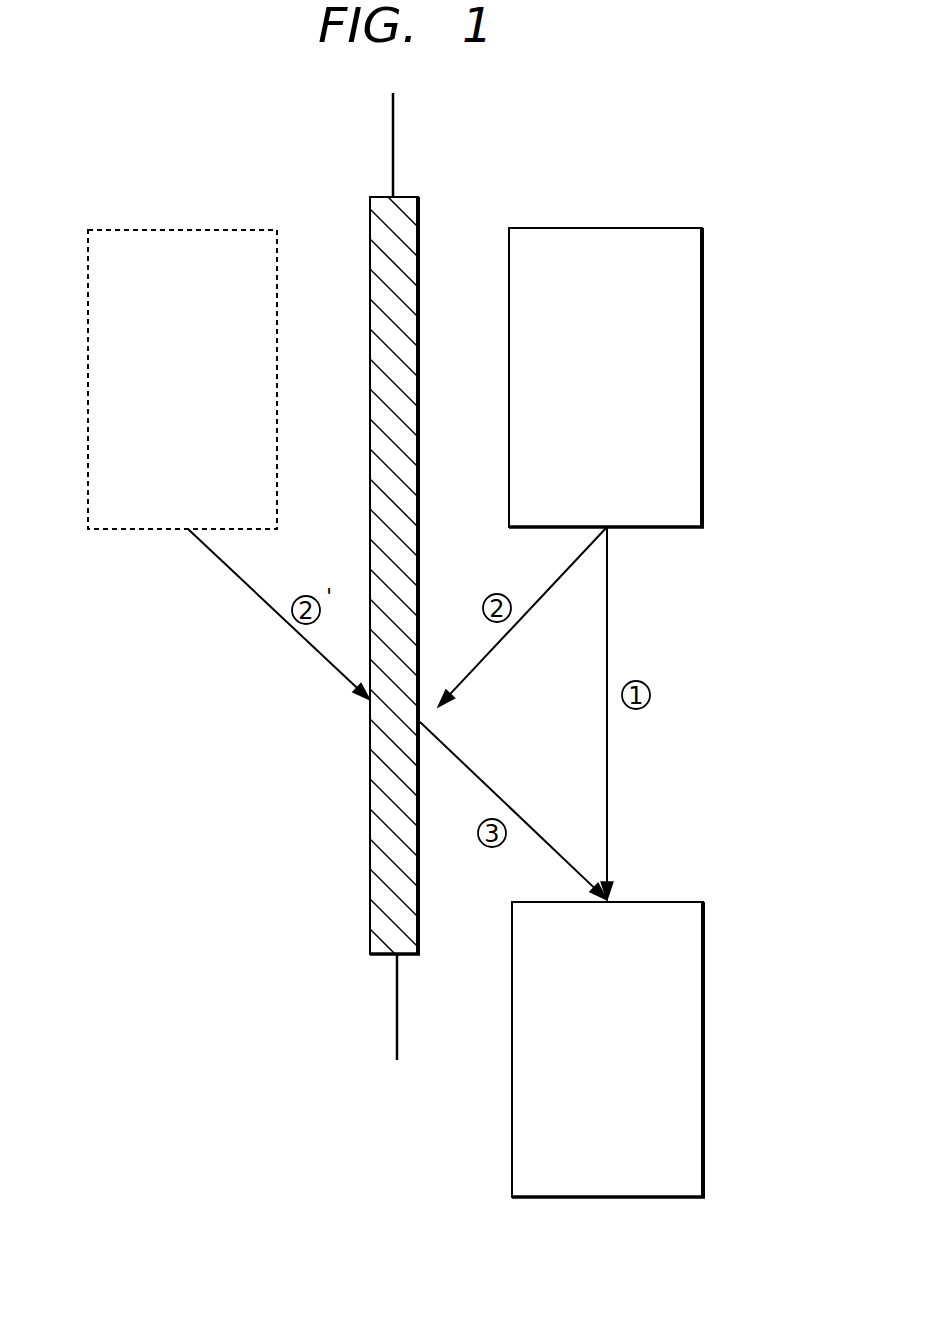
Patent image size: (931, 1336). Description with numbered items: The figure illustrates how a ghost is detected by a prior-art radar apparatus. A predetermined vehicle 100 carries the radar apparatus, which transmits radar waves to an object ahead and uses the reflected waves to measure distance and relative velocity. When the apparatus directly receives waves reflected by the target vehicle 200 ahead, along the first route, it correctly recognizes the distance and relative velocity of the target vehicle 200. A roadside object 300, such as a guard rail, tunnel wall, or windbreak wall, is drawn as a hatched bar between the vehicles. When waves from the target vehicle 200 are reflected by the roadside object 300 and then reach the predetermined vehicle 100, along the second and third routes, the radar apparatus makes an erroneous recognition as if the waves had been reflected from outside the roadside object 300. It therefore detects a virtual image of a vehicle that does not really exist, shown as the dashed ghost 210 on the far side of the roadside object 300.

The predetermined vehicle 100 is at (705, 915).
The target vehicle 200 is at (704, 252).
The ghost 210 is at (251, 230).
The roadside object 300 is at (403, 213).